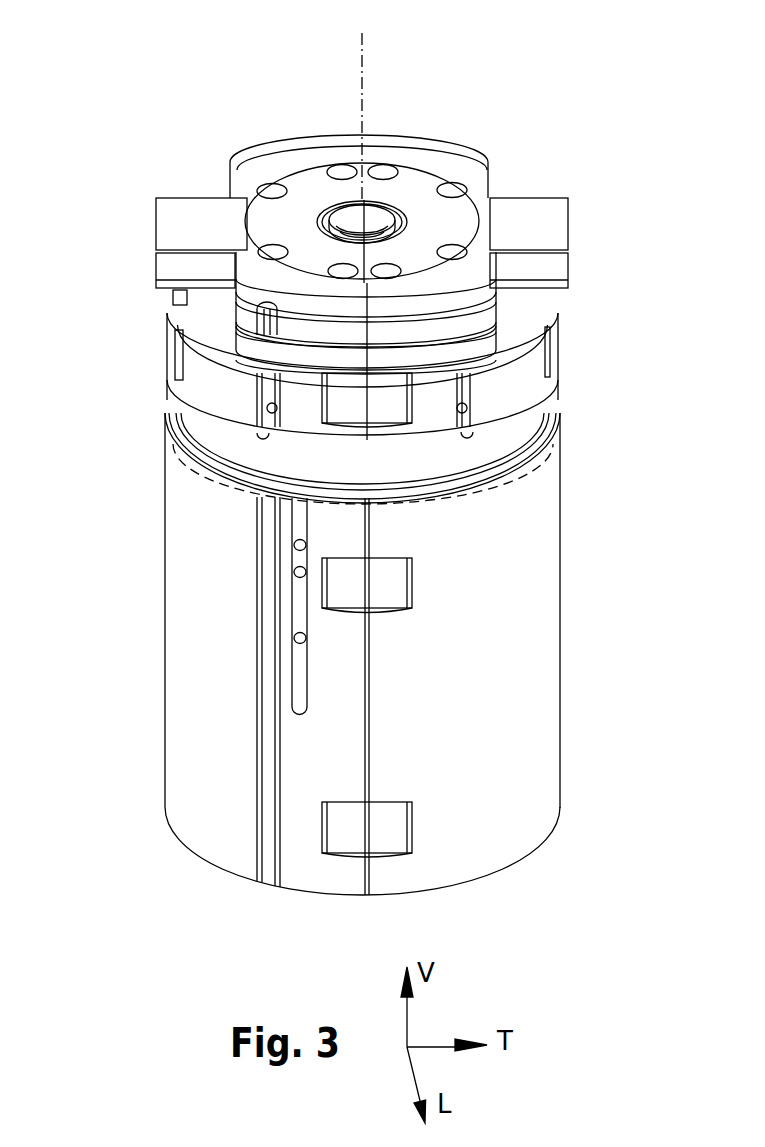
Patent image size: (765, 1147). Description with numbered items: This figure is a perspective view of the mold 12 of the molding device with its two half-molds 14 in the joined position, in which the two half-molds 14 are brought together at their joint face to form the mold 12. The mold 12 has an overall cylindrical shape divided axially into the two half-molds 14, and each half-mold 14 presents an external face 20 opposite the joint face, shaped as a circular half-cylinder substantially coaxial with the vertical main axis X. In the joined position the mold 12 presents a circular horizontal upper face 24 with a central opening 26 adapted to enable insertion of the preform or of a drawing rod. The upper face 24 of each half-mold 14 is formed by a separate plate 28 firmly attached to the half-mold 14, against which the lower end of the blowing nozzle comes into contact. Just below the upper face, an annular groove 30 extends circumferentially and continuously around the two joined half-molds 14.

The mold 12 is at (362, 222).
The half-mold 14 is at (368, 654).
The external face 20 is at (177, 772).
The upper face 24 is at (458, 215).
The central opening 26 is at (340, 217).
The plate 28 is at (294, 217).
The annular groove 30 is at (478, 340).